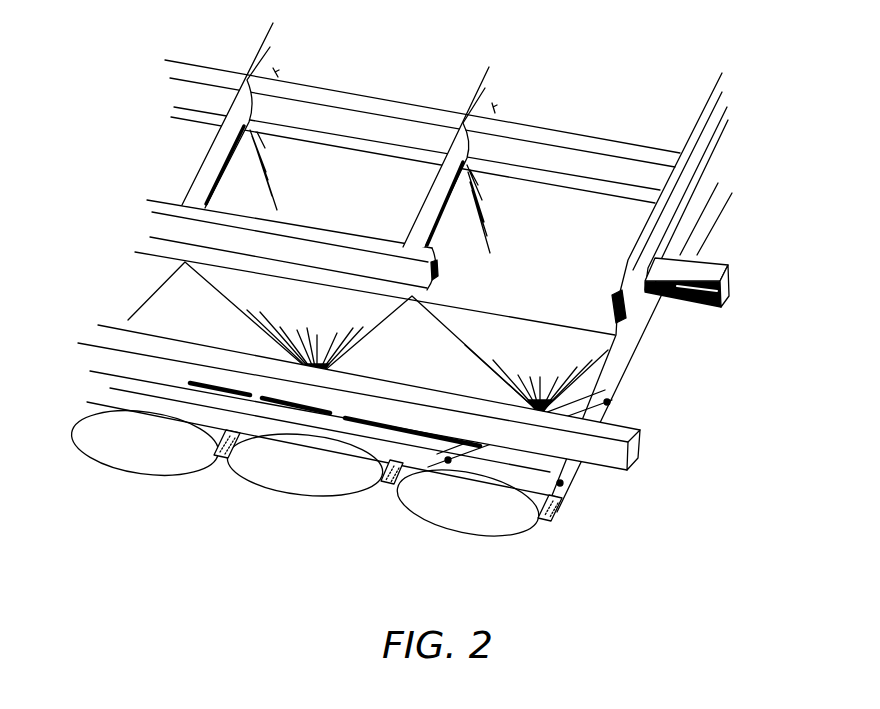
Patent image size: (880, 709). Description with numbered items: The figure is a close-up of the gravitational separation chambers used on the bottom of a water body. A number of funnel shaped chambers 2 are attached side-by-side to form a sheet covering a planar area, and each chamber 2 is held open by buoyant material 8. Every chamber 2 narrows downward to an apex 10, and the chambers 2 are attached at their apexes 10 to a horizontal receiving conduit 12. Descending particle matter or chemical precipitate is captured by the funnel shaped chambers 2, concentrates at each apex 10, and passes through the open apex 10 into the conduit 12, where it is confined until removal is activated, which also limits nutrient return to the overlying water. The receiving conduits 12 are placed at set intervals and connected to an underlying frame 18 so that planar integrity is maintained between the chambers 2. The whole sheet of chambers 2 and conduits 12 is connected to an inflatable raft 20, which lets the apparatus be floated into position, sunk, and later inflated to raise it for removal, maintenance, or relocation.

The funnel shaped chamber 2 is at (583, 220).
The buoyant material 8 is at (622, 315).
The apex 10 is at (287, 410).
The receiving conduit 12 is at (712, 258).
The underlying frame 18 is at (488, 470).
The inflatable raft 20 is at (277, 474).